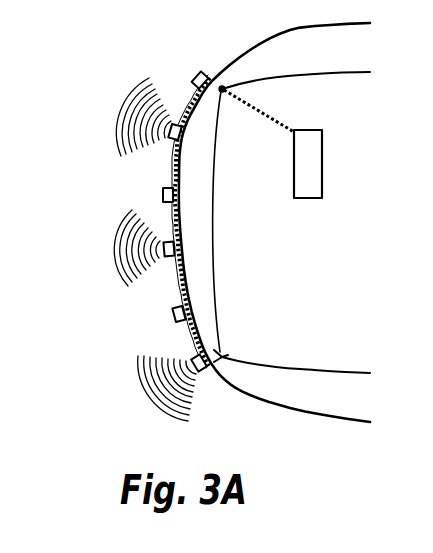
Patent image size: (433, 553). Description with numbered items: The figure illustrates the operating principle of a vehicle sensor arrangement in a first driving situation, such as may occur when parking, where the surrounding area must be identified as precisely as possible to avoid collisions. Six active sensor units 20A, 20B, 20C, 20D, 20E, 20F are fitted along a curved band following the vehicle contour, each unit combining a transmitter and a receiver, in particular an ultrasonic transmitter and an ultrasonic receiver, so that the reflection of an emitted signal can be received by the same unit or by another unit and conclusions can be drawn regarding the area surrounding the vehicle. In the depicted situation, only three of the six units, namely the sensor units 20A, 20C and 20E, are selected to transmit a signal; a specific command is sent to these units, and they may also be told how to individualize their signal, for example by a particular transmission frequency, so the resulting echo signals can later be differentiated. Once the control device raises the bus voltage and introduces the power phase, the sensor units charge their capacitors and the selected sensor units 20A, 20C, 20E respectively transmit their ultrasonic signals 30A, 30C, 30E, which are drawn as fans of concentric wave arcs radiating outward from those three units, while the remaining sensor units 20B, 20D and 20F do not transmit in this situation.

The sensor unit 20A is at (222, 357).
The sensor unit 20B is at (178, 313).
The sensor unit 20C is at (170, 252).
The sensor unit 20D is at (170, 196).
The sensor unit 20E is at (181, 135).
The sensor unit 20F is at (222, 90).
The ultrasonic signal 30A is at (157, 402).
The ultrasonic signal 30C is at (119, 282).
The ultrasonic signal 30E is at (119, 137).